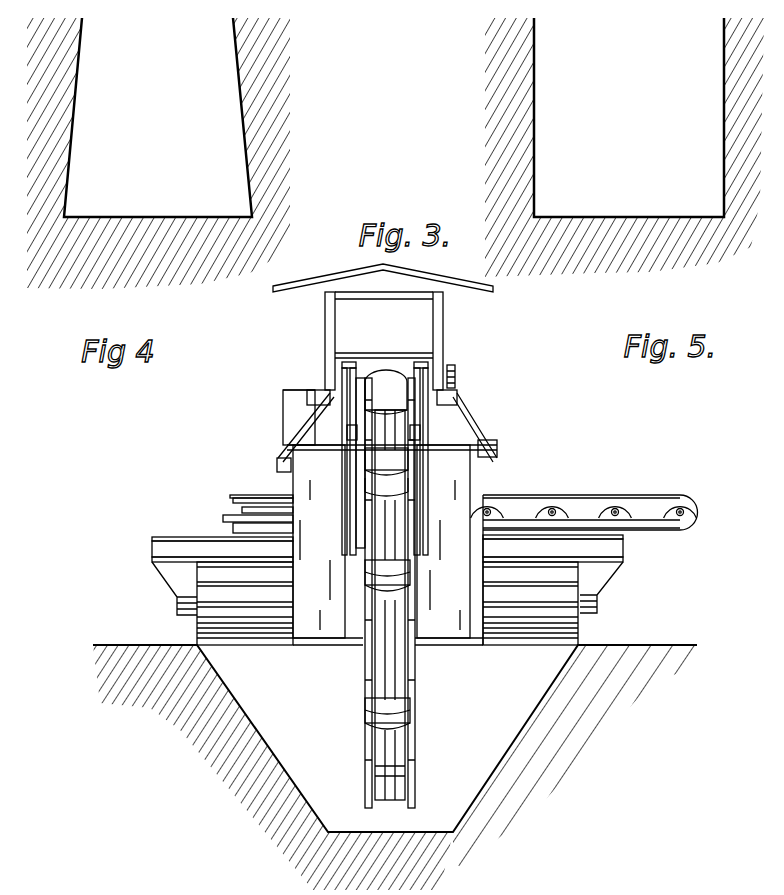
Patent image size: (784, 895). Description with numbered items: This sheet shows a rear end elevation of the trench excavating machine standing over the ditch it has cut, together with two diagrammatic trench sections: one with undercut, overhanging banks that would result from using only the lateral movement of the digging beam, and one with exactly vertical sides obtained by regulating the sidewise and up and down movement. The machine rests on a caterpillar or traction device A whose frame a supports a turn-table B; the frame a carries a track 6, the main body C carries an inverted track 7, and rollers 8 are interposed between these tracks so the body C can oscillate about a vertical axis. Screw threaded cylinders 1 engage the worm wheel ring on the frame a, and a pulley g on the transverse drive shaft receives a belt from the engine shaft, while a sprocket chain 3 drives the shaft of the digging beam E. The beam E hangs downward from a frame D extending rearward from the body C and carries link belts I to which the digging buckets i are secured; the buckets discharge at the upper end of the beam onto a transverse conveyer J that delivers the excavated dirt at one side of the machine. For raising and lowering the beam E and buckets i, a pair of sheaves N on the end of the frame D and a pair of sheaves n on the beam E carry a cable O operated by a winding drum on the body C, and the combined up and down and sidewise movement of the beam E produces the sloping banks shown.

The sprocket chain 3 is at (452, 370).
The pulley g is at (283, 400).
The screw threaded cylinder 1 is at (297, 400).
The frame D is at (288, 422).
The main frame or body C is at (294, 492).
The sheave N is at (415, 365).
The sheave n is at (344, 543).
The cable O is at (356, 485).
The link belt I is at (368, 395).
The digging bucket i is at (383, 374).
The digging beam E is at (392, 641).
The inverted track 7 is at (232, 500).
The track 6 is at (256, 526).
The turn-table B is at (223, 519).
The roller 8 is at (233, 528).
The frame a is at (163, 545).
The caterpillar or traction device A is at (218, 583).
The conveyer J is at (641, 495).